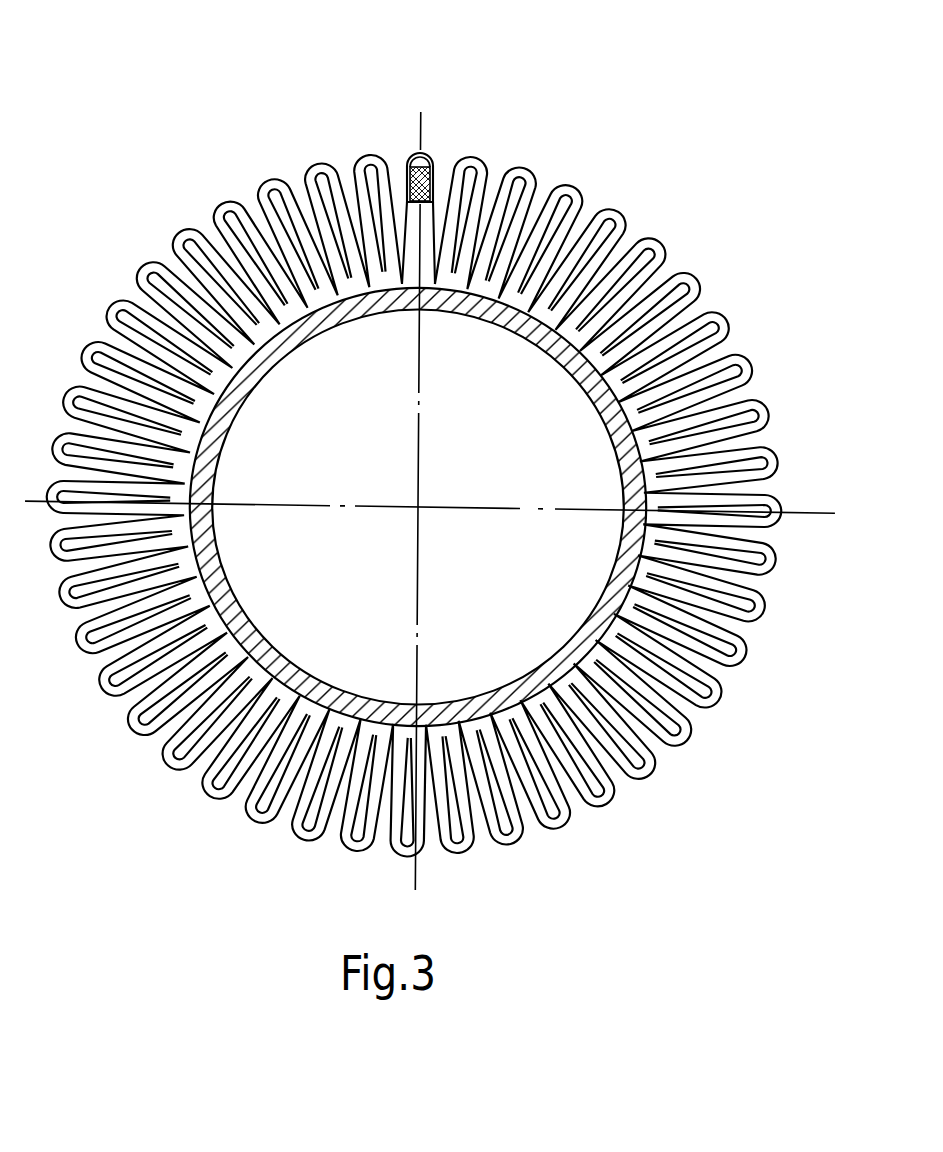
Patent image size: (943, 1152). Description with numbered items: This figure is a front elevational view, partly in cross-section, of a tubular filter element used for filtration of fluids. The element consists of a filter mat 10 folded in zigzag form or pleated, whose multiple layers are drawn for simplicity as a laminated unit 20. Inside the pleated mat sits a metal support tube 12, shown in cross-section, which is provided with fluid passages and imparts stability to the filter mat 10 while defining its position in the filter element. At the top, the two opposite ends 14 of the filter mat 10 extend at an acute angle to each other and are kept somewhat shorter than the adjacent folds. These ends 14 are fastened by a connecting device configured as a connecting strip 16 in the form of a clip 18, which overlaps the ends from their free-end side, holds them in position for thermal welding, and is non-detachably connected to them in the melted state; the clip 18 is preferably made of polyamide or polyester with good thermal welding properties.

The filter mat 10 is at (723, 330).
The support tube 12 is at (468, 703).
The ends of the filter mat 14 is at (397, 180).
The connecting strip 16 is at (411, 143).
The clip 18 is at (427, 160).
The laminated unit 20 is at (602, 799).